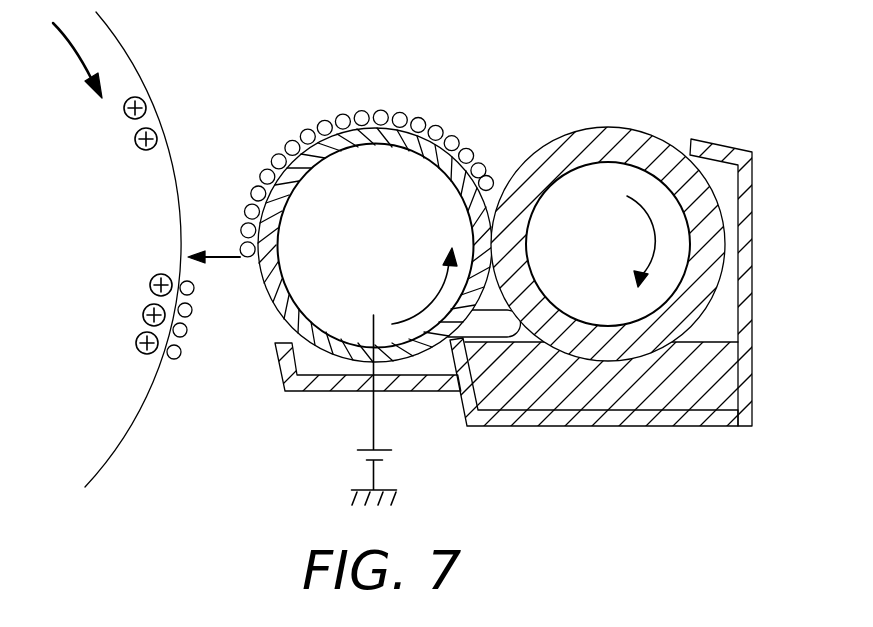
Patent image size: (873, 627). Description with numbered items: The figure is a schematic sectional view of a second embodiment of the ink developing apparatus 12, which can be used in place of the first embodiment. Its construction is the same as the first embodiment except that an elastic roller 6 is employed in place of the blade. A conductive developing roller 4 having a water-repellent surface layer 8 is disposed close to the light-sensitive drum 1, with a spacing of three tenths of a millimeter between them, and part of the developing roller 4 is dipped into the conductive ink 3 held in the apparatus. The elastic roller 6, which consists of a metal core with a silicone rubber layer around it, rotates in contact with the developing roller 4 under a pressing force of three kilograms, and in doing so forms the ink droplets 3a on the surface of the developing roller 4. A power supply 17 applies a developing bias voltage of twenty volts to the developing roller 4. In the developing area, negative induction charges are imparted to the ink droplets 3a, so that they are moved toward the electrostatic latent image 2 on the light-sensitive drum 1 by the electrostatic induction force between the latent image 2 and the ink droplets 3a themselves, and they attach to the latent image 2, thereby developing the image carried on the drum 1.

The light-sensitive drum 1 is at (133, 60).
The electrostatic latent image 2 is at (123, 117).
The conductive ink 3 is at (672, 395).
The ink droplets 3a is at (418, 112).
The developing roller 4 is at (345, 165).
The elastic roller 6 is at (618, 110).
The water-repellent surface layer 8 is at (283, 305).
The ink developing apparatus 12 is at (722, 130).
The power supply 17 is at (355, 452).